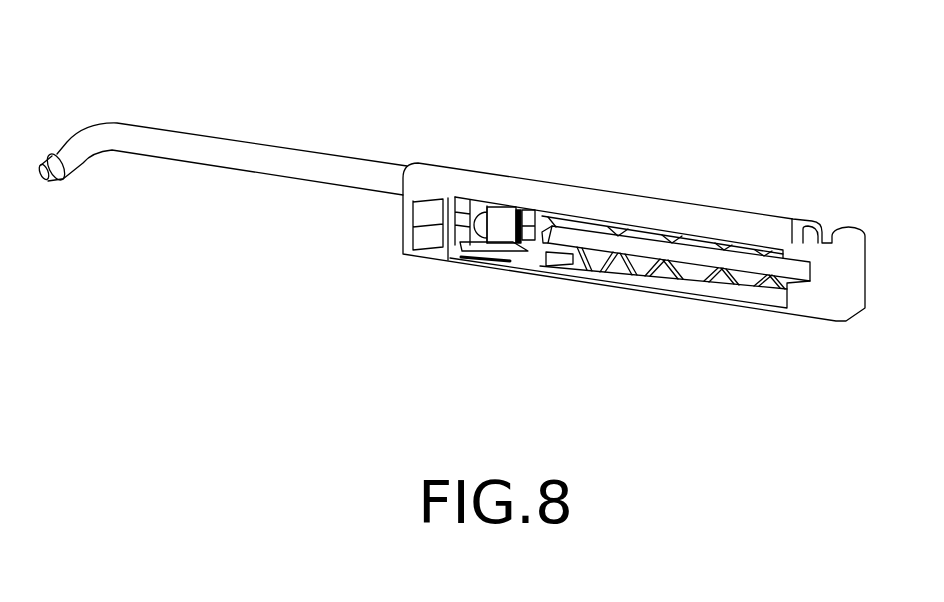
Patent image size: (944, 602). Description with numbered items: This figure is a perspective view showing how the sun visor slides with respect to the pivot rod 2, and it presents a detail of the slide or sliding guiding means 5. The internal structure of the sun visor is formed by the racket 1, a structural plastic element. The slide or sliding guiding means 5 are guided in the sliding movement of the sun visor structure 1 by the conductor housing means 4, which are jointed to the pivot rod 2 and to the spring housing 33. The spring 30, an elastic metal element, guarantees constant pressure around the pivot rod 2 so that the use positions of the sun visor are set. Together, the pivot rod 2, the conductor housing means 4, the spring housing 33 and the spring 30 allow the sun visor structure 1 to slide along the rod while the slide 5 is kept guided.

The racket 1 is at (732, 287).
The pivot rod 2 is at (175, 148).
The conductor housing means 4 is at (674, 242).
The slide or sliding guiding means 5 is at (462, 258).
The spring 30 is at (500, 222).
The spring housing 33 is at (490, 246).